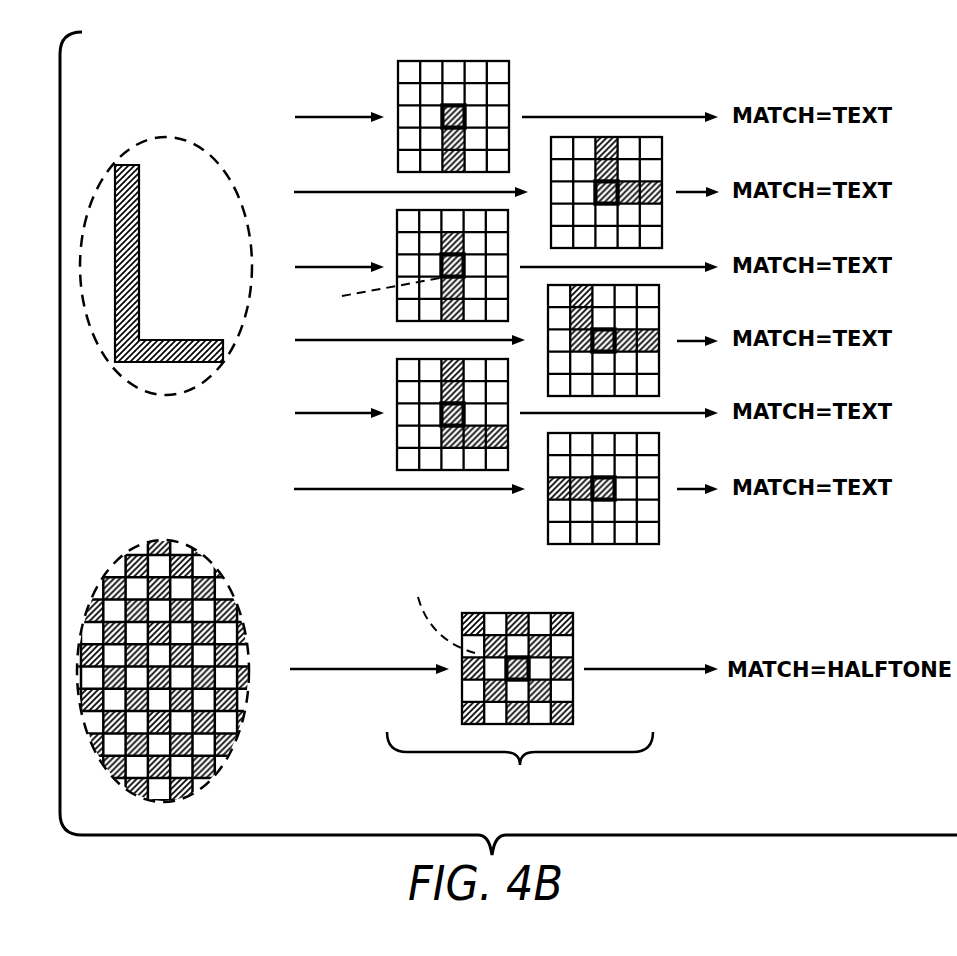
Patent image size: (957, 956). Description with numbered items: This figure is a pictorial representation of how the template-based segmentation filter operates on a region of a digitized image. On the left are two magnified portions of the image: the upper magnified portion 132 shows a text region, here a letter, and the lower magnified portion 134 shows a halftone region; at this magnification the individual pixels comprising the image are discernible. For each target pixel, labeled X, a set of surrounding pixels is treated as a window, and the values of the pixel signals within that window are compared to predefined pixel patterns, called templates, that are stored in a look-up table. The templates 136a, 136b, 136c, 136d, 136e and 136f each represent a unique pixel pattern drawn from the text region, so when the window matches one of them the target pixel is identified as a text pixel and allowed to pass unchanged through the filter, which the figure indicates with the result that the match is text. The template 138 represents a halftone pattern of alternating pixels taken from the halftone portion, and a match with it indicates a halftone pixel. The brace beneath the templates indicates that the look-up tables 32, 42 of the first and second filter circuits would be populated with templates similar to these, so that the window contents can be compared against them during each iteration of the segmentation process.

The magnified portion 132 is at (167, 137).
The magnified portion 134 is at (160, 537).
The template 136a is at (500, 60).
The template 136b is at (562, 135).
The template 136c is at (397, 245).
The template 136d is at (660, 319).
The template 136e is at (397, 370).
The template 136f is at (600, 544).
The template 138 is at (515, 613).
The look-up table 32 is at (520, 764).
The look-up table 42 is at (520, 748).